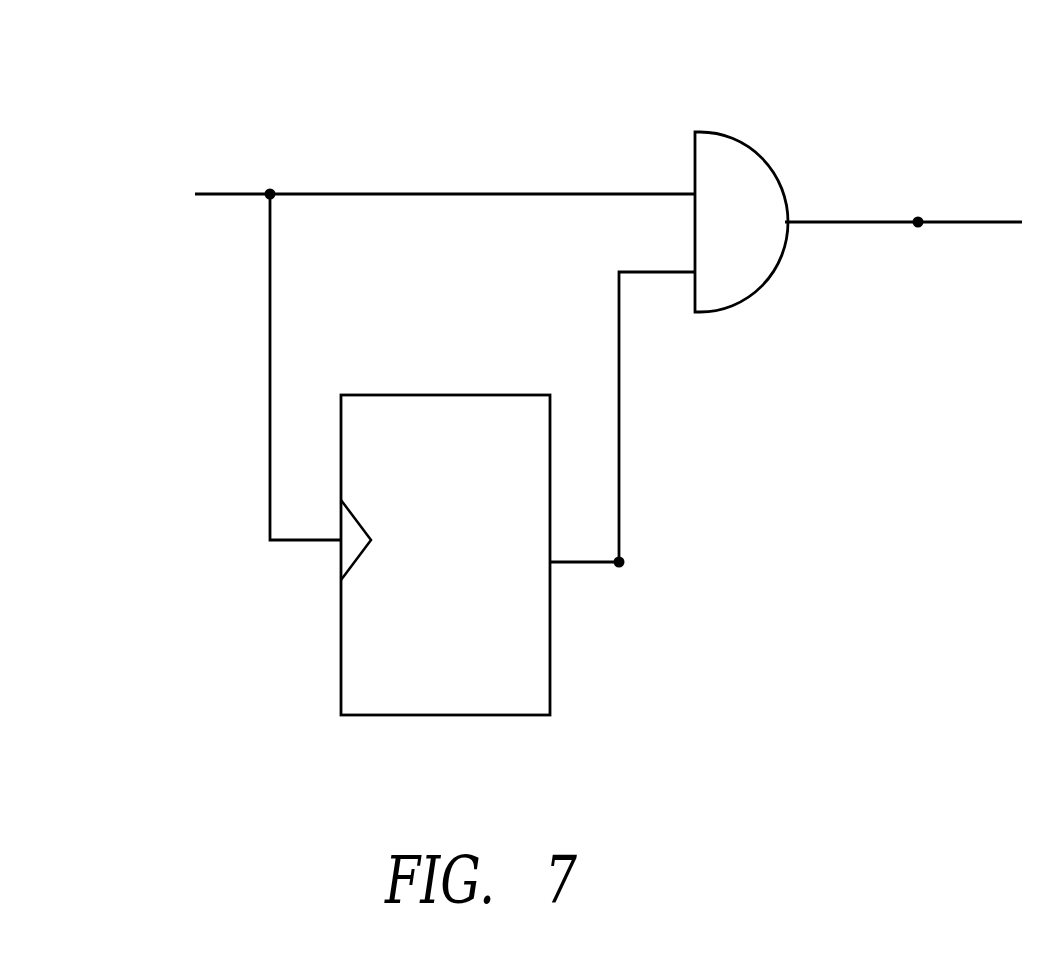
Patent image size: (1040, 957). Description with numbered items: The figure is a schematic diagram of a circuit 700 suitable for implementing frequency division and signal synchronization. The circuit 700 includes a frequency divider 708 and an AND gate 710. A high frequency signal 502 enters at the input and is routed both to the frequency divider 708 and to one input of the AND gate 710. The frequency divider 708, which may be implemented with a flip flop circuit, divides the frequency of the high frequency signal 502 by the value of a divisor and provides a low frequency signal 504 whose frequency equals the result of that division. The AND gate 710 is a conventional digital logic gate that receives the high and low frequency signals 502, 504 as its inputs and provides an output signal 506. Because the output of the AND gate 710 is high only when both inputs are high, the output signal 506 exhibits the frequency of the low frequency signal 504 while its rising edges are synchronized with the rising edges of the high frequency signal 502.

The circuit 700 is at (892, 58).
The high frequency signal 502 is at (270, 190).
The frequency divider 708 is at (472, 680).
The low frequency signal 504 is at (619, 562).
The AND gate 710 is at (742, 300).
The output signal 506 is at (918, 222).